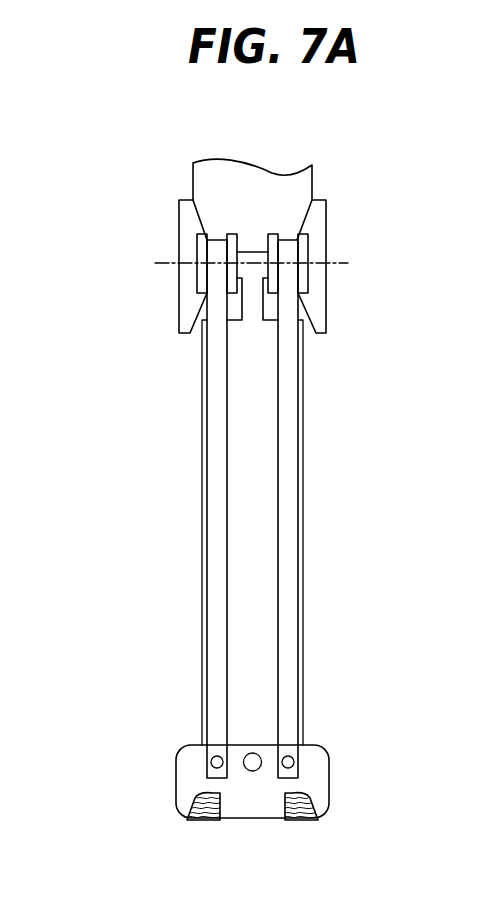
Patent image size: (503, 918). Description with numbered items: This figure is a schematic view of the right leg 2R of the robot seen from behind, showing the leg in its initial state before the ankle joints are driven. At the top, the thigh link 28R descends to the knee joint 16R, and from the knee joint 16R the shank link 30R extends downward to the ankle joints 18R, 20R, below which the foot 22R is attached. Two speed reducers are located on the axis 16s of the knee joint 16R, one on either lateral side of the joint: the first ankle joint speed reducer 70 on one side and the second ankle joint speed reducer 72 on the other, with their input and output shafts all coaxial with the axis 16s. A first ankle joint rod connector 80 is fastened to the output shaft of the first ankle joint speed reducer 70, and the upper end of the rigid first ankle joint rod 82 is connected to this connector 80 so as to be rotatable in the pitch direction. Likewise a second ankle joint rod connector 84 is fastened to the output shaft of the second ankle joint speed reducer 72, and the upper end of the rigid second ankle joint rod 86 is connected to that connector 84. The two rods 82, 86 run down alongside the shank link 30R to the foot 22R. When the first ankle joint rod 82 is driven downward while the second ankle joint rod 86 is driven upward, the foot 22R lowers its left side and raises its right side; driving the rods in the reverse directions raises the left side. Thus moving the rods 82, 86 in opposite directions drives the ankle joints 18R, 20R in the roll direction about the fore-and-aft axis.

The right leg 2R is at (263, 178).
The thigh link 28R is at (207, 183).
The knee joint 16R is at (276, 256).
The axis of the knee joint 16s is at (340, 263).
The first ankle joint speed reducer 70 is at (188, 313).
The second ankle joint speed reducer 72 is at (322, 310).
The first ankle joint rod connector 80 is at (202, 250).
The second ankle joint rod connector 84 is at (305, 243).
The first ankle joint rod 82 is at (217, 428).
The second ankle joint rod 86 is at (288, 428).
The shank link 30R is at (268, 509).
The ankle joint 18R is at (313, 509).
The ankle joint 20R is at (313, 509).
The foot 22R is at (250, 808).